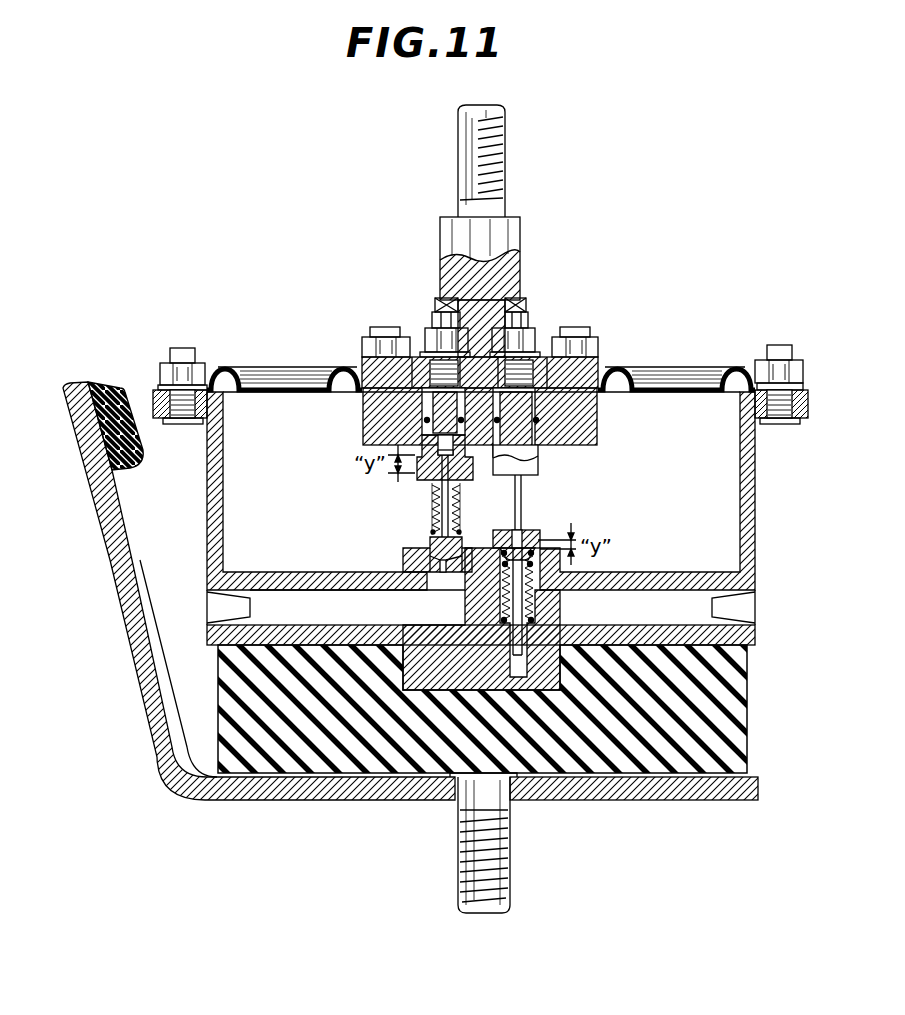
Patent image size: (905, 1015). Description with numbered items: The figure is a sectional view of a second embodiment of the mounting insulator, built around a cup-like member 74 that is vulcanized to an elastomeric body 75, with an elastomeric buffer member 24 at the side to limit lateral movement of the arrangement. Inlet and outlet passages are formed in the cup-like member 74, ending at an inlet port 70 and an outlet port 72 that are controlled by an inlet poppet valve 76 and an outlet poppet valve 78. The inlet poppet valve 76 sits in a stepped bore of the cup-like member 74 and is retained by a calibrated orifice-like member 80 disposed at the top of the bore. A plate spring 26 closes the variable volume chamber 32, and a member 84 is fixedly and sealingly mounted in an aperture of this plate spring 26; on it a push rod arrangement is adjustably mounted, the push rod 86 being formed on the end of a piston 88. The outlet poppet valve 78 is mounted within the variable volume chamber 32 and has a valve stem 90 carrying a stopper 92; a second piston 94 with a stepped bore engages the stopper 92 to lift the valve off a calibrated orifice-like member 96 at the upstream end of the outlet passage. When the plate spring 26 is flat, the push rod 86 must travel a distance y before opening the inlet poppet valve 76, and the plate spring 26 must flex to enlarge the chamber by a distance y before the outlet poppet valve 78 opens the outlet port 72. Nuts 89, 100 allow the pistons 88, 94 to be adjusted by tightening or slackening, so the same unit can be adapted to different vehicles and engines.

The elastomeric buffer member 24 is at (108, 386).
The plate spring 26 is at (257, 370).
The variable volume chamber 32 is at (282, 495).
The inlet port 70 is at (522, 535).
The outlet port 72 is at (418, 562).
The cup-like member 74 is at (752, 507).
The elastomeric body 75 is at (737, 712).
The inlet poppet valve 76 is at (540, 603).
The outlet poppet valve 78 is at (422, 500).
The calibrated orifice-like member 80 is at (494, 537).
The member 84 is at (600, 398).
The push rod 86 is at (522, 496).
The piston 88 is at (538, 463).
The nut 89 is at (540, 336).
The valve stem 90 is at (446, 512).
The stopper 92 is at (467, 477).
The piston 94 is at (393, 442).
The calibrated orifice-like member 96 is at (460, 572).
The nut 100 is at (422, 338).